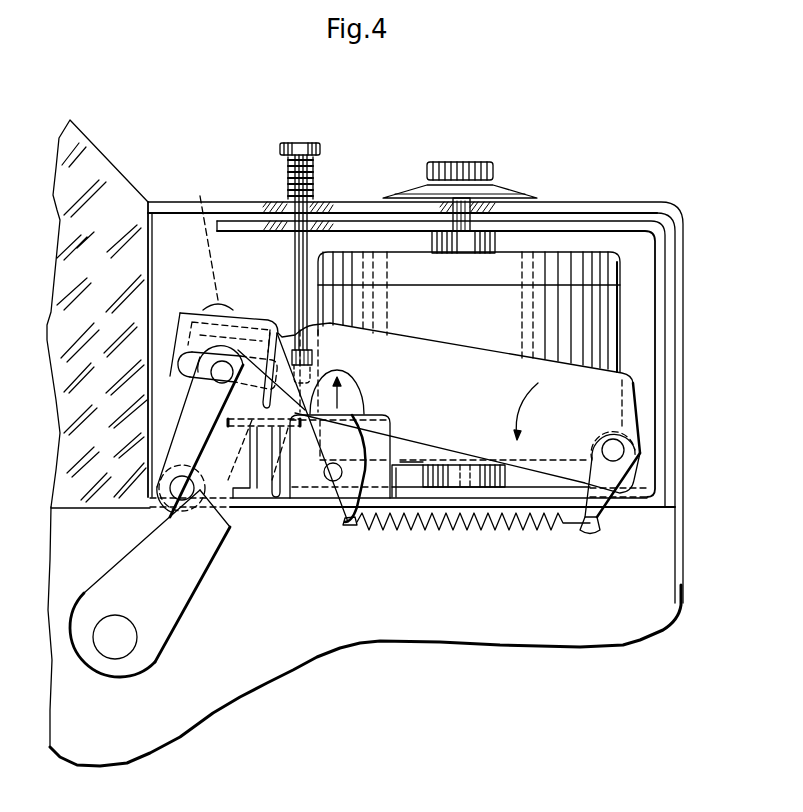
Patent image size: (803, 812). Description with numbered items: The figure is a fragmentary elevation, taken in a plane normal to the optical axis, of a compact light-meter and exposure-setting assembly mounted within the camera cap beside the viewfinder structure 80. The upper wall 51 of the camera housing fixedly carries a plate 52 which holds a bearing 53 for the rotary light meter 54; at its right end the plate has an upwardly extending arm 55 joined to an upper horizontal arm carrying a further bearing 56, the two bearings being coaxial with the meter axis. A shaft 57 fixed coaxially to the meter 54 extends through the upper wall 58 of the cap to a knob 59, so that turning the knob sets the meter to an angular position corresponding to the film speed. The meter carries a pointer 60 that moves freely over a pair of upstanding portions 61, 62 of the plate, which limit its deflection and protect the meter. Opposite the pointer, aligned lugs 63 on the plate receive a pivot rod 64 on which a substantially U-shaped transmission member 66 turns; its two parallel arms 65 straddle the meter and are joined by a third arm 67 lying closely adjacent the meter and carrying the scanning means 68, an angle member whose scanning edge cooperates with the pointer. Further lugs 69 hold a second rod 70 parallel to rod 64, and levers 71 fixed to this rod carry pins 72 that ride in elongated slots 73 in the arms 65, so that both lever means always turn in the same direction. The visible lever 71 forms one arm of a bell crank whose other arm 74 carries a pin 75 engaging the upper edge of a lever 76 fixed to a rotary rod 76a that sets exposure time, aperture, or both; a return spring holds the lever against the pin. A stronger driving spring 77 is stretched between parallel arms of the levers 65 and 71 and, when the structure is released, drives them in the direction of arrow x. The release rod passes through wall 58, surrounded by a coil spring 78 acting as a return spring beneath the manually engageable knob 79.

The upper wall 51 is at (320, 502).
The plate 52 is at (470, 492).
The bearing 53 is at (490, 481).
The rotary light meter 54 is at (580, 263).
The upwardly extending arm 55 is at (660, 320).
The further bearing 56 is at (502, 227).
The shaft 57 is at (480, 197).
The upper wall of cap 58 is at (249, 201).
The knob 59 is at (470, 165).
The indicating element 60 is at (270, 504).
The upstanding portion 61 is at (256, 492).
The upstanding portion 62 is at (276, 468).
The upstanding lugs 63 is at (640, 480).
The pivot means 64 is at (605, 500).
The parallel arms 65 is at (515, 388).
The U-shaped transmission member 66 is at (351, 408).
The third arm 67 is at (204, 235).
The scanning means 68 is at (265, 345).
The aligned lugs 69 is at (377, 482).
The rod 70 is at (333, 481).
The levers 71 is at (335, 443).
The pins 72 is at (222, 376).
The elongated slots 73 is at (177, 362).
The arm 74 is at (186, 430).
The pin 75 is at (175, 495).
The lever 76 is at (203, 563).
The rotary rod 76a is at (133, 644).
The spring 77 is at (405, 526).
The coil spring 78 is at (313, 174).
The knob 79 is at (305, 143).
The viewfinder structure 80 is at (118, 183).